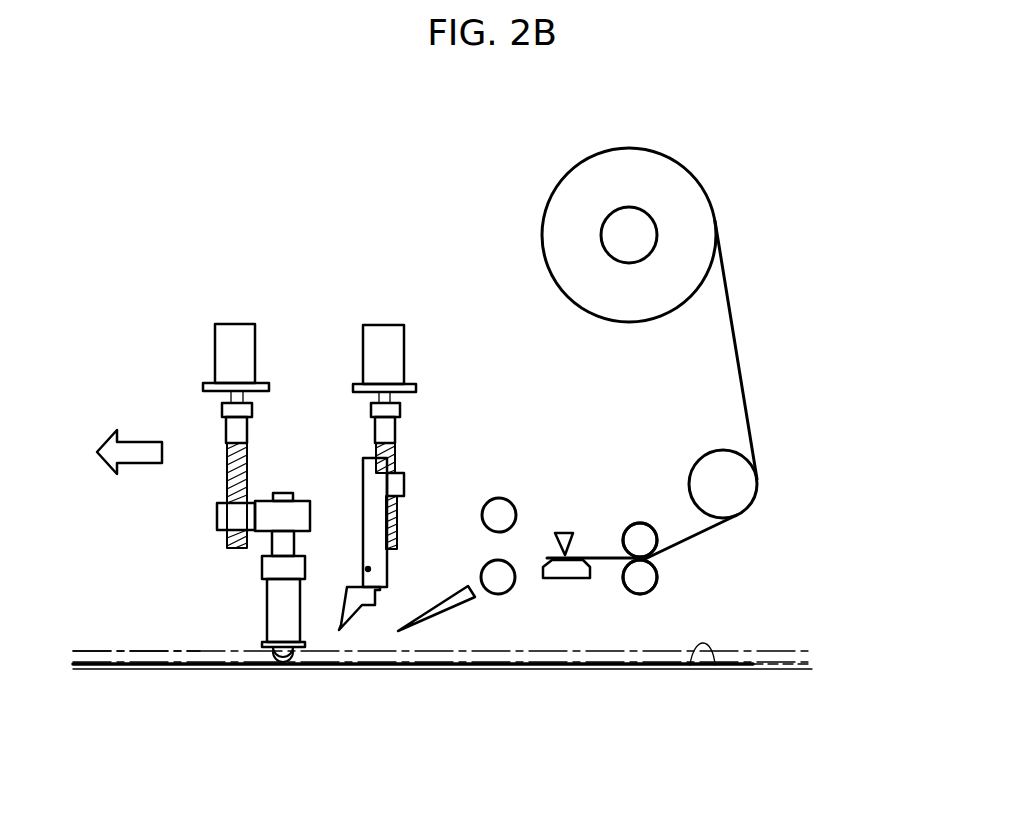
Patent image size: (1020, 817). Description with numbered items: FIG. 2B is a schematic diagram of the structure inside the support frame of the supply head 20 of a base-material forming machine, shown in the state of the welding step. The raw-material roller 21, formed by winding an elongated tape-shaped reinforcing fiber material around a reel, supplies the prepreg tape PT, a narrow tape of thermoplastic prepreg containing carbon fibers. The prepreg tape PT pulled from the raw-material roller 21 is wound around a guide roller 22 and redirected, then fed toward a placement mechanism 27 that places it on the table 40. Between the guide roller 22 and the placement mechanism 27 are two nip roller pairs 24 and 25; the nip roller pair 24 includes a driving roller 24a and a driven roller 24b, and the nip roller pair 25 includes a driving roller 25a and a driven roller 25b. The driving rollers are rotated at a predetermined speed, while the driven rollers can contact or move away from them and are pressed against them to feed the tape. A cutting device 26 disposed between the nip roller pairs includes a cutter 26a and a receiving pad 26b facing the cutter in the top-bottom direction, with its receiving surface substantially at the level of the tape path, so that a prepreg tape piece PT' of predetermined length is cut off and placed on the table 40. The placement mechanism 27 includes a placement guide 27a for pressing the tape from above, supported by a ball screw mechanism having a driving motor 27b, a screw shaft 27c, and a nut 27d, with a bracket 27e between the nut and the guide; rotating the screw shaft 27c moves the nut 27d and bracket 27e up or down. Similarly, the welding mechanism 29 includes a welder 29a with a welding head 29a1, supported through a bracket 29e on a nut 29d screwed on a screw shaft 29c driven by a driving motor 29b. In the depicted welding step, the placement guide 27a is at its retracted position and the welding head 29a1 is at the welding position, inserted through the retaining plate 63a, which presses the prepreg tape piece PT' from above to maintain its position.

The supply head 20 is at (219, 226).
The raw-material roller 21 is at (560, 208).
The guide roller 22 is at (738, 482).
The nip roller pair 24 is at (658, 562).
The driving roller 24a is at (640, 588).
The driven roller 24b is at (640, 524).
The nip roller pair 25 is at (485, 600).
The driving roller 25a is at (506, 586).
The driven roller 25b is at (498, 505).
The cutting device 26 is at (581, 522).
The cutter 26a is at (556, 533).
The receiving pad 26b is at (568, 573).
The placement mechanism 27 is at (362, 322).
The placement guide 27a is at (357, 603).
The driving motor 27b is at (393, 345).
The screw shaft 27c is at (395, 440).
The nut 27d is at (395, 485).
The bracket 27e is at (372, 527).
The welding mechanism 29 is at (215, 322).
The welder 29a is at (276, 624).
The welding head 29a1 is at (272, 665).
The driving motor 29b is at (247, 353).
The screw shaft 29c is at (233, 460).
The nut 29d is at (227, 517).
The bracket 29e is at (300, 512).
The table 40 is at (774, 670).
The retaining plate 63a is at (113, 652).
The prepreg tape PT is at (678, 390).
The prepreg tape piece PT' is at (442, 697).